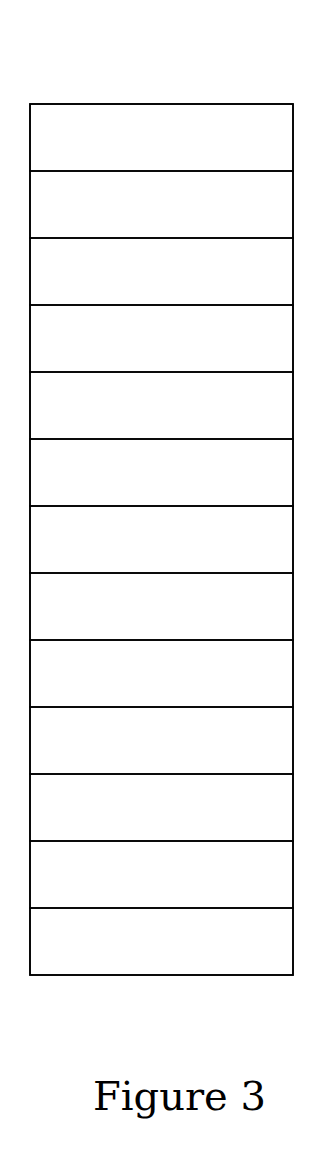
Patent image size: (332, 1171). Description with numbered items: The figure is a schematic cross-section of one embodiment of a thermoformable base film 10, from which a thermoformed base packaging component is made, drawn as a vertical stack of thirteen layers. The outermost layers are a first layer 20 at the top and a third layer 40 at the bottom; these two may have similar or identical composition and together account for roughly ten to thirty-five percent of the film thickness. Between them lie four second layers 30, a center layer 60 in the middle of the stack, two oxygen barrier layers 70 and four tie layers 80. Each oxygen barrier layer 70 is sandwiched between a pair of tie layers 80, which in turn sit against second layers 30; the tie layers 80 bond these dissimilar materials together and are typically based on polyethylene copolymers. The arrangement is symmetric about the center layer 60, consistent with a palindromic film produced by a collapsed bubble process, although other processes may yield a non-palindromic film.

The thermoformable base film 10 is at (190, 73).
The first layer 20 is at (179, 157).
The second layer 30 is at (179, 224).
The third layer 40 is at (179, 961).
The center layer 60 is at (179, 559).
The oxygen barrier layer 70 is at (179, 358).
The tie layer 80 is at (179, 291).